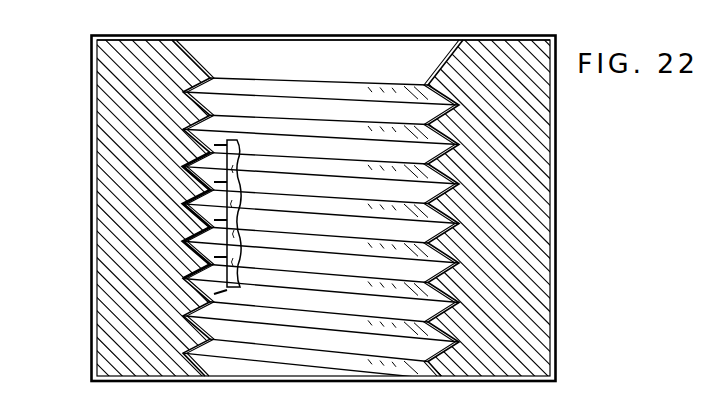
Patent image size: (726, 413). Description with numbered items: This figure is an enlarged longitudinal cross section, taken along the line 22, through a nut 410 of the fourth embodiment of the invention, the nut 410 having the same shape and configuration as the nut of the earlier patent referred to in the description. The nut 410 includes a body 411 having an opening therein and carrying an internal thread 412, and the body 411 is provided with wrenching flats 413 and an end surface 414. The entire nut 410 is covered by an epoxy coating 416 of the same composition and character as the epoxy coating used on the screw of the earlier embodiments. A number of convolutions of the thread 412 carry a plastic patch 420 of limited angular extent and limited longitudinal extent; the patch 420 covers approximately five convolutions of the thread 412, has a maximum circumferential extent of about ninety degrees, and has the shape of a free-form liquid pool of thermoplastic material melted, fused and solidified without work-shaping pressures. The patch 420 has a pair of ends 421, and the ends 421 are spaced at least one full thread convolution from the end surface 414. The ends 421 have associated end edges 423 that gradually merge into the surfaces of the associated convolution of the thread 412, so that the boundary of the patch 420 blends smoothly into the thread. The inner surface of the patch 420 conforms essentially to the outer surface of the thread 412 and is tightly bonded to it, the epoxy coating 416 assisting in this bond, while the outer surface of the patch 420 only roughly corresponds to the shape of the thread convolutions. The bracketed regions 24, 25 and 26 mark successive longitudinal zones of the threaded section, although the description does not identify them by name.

The nut 410 is at (513, 33).
The body 411 is at (527, 117).
The internal thread 412 is at (443, 90).
The wrenching flats 413 is at (562, 146).
The end surface 414 is at (140, 34).
The epoxy coating 416 is at (430, 322).
The plastic patch 420 is at (222, 288).
The ends 421 is at (210, 130).
The end edges 423 is at (211, 128).
The line 22– 22 is at (322, 22).
The thread zone 24 is at (55, 269).
The thread zone 25 is at (55, 193).
The thread zone 26 is at (37, 116).